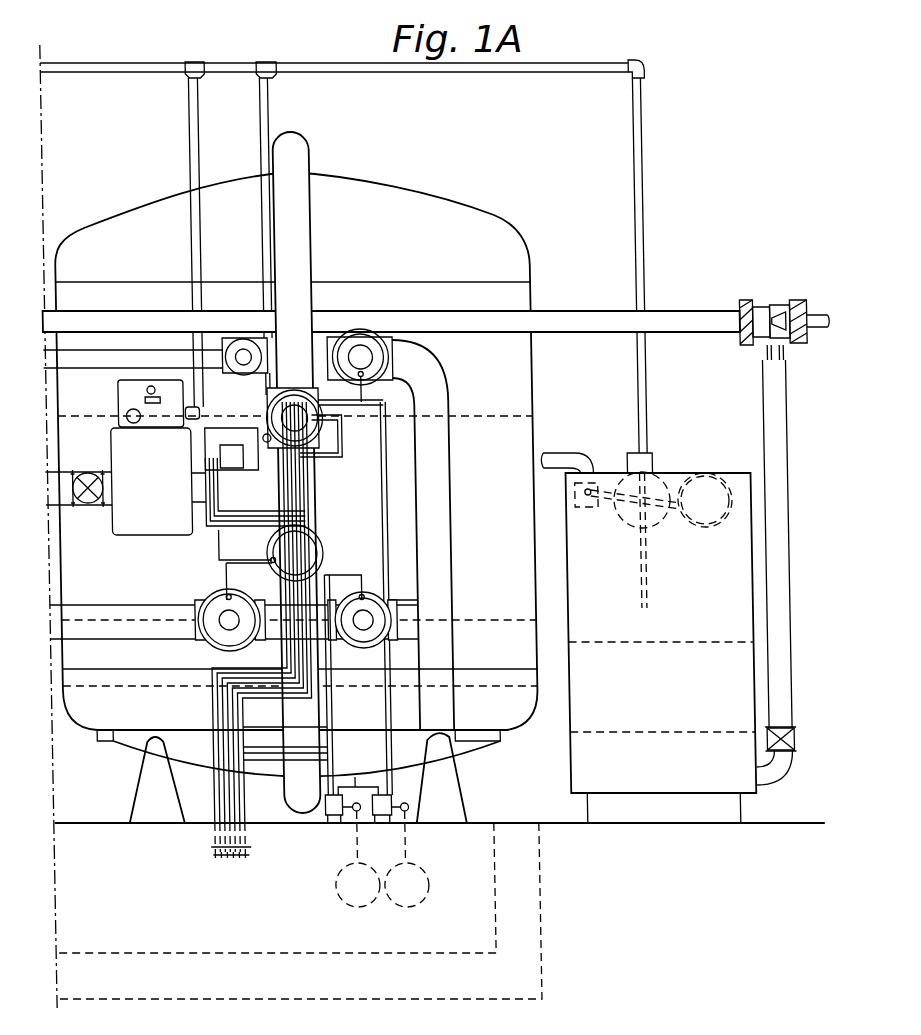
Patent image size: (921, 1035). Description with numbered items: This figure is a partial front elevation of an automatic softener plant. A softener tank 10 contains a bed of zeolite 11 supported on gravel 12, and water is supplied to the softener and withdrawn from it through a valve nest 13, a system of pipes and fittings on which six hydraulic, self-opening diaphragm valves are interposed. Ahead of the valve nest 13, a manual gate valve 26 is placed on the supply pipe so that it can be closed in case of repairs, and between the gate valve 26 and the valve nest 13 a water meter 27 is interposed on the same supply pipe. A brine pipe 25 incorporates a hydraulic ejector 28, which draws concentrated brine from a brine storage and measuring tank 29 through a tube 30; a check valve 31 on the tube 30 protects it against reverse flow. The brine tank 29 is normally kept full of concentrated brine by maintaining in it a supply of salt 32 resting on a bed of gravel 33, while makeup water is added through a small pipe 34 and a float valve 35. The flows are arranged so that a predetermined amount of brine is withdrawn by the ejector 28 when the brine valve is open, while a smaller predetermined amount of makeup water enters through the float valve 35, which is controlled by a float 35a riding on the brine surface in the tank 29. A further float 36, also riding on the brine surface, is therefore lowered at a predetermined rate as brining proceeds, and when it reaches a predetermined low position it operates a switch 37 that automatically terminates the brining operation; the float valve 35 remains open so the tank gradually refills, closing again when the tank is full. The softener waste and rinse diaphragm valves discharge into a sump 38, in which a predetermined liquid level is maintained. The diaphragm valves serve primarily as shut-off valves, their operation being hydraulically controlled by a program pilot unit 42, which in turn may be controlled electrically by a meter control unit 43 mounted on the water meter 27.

The softener tank 10 is at (367, 187).
The bed of zeolite 11 is at (502, 413).
The gravel 12 is at (499, 617).
The valve nest 13 is at (318, 467).
The brine pipe 25 is at (681, 312).
The manual gate valve 26 is at (79, 505).
The water meter 27 is at (129, 527).
The hydraulic ejector 28 is at (767, 300).
The brine storage and measuring tank 29 is at (703, 485).
The tube 30 is at (771, 410).
The check valve 31 is at (777, 750).
The salt 32 is at (620, 642).
The bed of gravel 33 is at (627, 732).
The small pipe 34 is at (550, 452).
The float valve 35 is at (579, 507).
The float 35a is at (703, 528).
The float 36 is at (651, 520).
The switch 37 is at (637, 460).
The sump 38 is at (80, 945).
The program pilot unit 42 is at (214, 430).
The meter control unit 43 is at (111, 390).